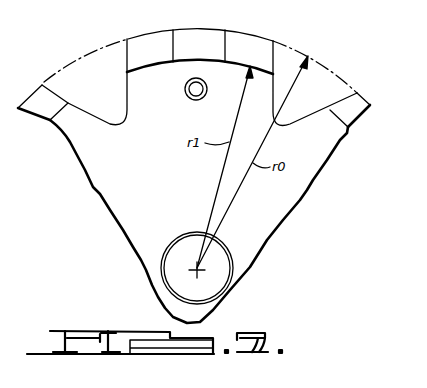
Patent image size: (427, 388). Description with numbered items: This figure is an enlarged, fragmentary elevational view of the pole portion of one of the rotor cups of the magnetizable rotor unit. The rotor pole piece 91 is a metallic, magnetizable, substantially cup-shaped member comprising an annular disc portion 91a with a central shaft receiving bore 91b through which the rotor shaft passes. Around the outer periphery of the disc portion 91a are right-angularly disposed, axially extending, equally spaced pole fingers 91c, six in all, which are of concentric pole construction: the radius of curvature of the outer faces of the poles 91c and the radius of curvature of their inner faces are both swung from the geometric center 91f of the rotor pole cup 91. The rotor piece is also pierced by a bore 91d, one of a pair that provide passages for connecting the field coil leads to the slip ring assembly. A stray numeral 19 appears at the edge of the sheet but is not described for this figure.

The rotor pole piece 91 is at (370, 100).
The annular disc portion 91a is at (160, 171).
The central shaft receiving bore 91b is at (224, 271).
The pole finger 91c is at (180, 25).
The bore 91d is at (190, 94).
The geometric center 91f is at (199, 266).
The adjacent reference 19 is at (413, 282).